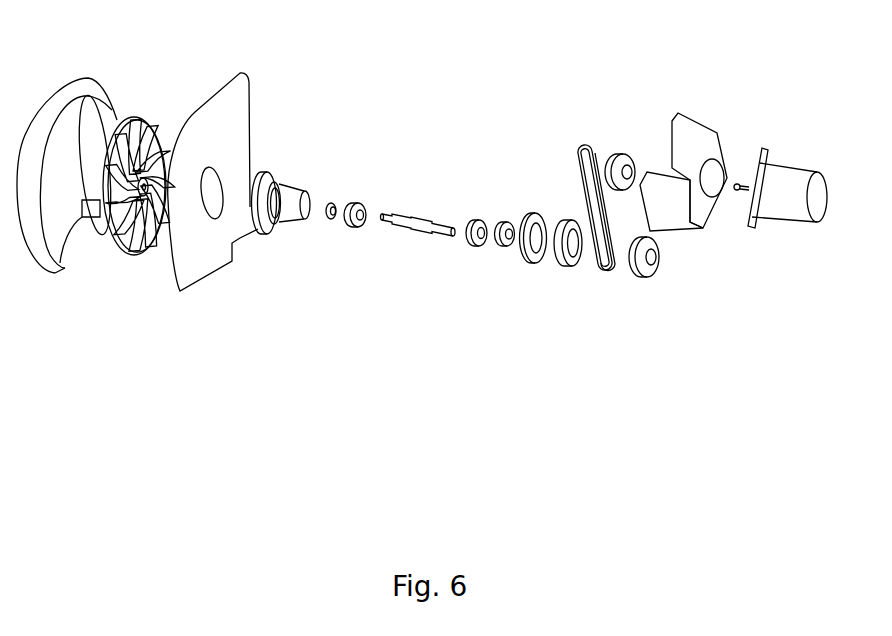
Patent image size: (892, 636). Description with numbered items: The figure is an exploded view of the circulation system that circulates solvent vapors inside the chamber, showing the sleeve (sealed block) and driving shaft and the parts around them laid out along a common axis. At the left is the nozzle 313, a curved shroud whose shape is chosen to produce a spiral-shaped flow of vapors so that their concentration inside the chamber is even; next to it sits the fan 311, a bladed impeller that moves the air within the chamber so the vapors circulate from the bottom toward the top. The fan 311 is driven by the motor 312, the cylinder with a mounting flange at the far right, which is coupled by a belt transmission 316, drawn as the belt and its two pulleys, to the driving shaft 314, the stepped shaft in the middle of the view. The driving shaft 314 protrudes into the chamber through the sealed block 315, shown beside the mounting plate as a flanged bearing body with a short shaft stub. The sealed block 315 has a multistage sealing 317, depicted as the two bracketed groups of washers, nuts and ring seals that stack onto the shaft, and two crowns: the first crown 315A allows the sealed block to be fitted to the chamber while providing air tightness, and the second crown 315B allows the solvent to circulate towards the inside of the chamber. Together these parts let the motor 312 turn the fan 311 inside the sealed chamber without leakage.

The fan 311 is at (119, 212).
The motor 312 is at (755, 198).
The nozzle 313 is at (30, 232).
The driving shaft 314 is at (414, 223).
The sealed block 315 is at (284, 268).
The first crown 315A is at (283, 217).
The second crown 315B is at (268, 237).
The belt transmission 316 is at (597, 280).
The multistage sealing 317 is at (327, 188).